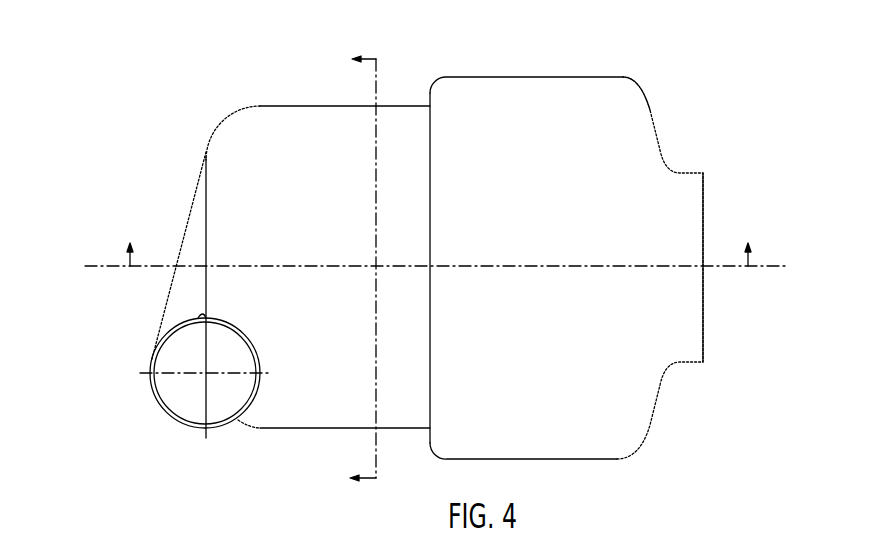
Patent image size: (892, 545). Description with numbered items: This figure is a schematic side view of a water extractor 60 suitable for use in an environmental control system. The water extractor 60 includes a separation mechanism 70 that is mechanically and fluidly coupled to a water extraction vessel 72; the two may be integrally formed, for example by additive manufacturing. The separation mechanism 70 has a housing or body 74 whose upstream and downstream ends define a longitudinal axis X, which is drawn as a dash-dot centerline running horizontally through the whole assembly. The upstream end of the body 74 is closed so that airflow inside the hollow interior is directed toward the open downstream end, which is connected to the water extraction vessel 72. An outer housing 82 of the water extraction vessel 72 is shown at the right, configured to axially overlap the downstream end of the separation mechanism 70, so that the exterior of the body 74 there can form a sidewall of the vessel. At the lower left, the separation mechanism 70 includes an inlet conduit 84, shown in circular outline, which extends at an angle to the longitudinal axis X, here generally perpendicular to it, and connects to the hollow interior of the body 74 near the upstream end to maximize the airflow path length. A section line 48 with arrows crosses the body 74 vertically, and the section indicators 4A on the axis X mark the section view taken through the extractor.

The water extractor 60 is at (158, 97).
The separation mechanism 70 is at (302, 97).
The water extraction vessel 72 is at (533, 60).
The body 74 is at (303, 412).
The outer housing 82 is at (617, 92).
The inlet conduit 84 is at (150, 357).
The section line 48 is at (377, 269).
The section view indicator 4A is at (440, 270).
The longitudinal axis X is at (436, 267).